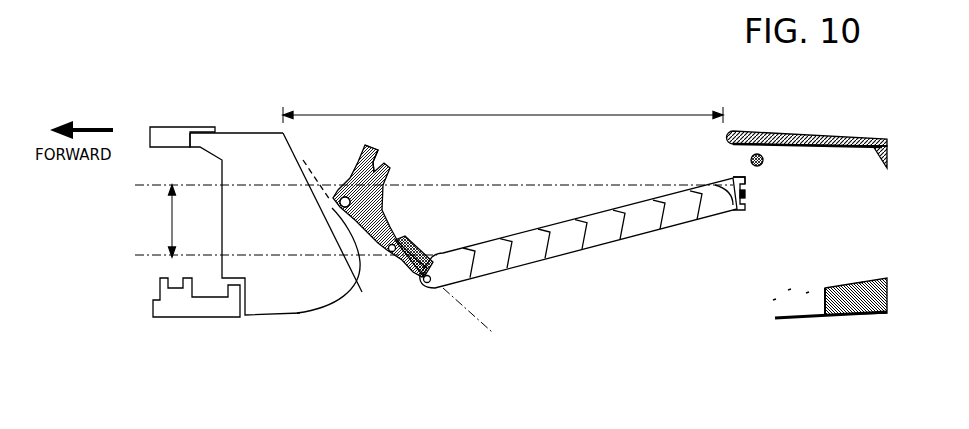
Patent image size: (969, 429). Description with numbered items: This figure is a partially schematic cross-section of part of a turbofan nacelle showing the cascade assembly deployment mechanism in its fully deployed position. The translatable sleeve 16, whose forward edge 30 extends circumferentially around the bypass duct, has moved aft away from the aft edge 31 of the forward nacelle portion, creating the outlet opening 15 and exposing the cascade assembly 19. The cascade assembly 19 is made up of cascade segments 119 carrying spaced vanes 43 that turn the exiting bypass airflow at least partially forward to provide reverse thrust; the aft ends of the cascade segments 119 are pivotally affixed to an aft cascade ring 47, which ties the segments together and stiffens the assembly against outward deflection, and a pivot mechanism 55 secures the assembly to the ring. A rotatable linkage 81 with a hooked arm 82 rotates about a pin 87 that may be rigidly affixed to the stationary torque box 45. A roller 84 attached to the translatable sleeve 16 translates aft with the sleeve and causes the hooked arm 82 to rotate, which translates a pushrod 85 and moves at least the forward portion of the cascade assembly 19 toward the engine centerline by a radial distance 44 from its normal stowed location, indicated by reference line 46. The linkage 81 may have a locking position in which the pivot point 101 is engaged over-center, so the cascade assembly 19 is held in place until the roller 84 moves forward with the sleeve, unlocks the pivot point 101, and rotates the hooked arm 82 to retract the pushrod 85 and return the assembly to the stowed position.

The outlet opening 15 is at (503, 109).
The translatable sleeve 16 is at (828, 132).
The cascade assembly 19 is at (580, 278).
The forward edge 30 is at (727, 133).
The aft edge 31 is at (283, 130).
The spaced vanes 43 is at (585, 223).
The radial distance 44 is at (286, 221).
The torque box 45 is at (248, 132).
The reference line 46 is at (190, 182).
The aft cascade ring 47 is at (738, 172).
The pivot mechanism 55 is at (747, 197).
The rotatable linkage 81 is at (372, 208).
The hooked arm 82 is at (372, 147).
The roller 84 is at (759, 154).
The pushrod 85 is at (410, 248).
The pin 87 is at (330, 208).
The pivot point 101 is at (390, 255).
The cascade segments 119 is at (515, 233).